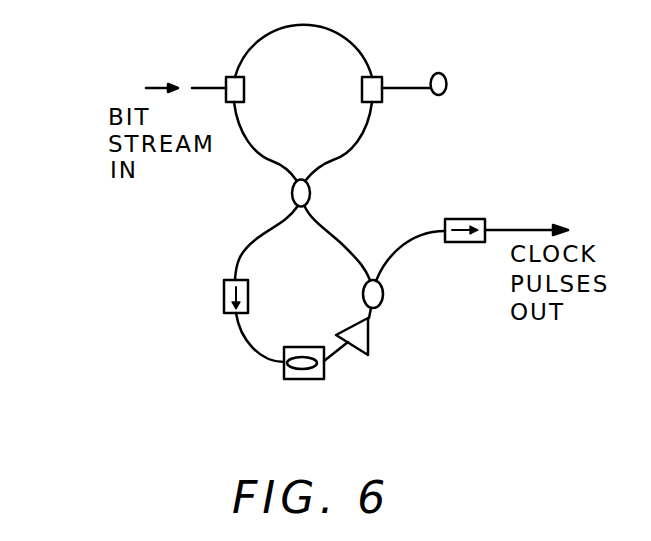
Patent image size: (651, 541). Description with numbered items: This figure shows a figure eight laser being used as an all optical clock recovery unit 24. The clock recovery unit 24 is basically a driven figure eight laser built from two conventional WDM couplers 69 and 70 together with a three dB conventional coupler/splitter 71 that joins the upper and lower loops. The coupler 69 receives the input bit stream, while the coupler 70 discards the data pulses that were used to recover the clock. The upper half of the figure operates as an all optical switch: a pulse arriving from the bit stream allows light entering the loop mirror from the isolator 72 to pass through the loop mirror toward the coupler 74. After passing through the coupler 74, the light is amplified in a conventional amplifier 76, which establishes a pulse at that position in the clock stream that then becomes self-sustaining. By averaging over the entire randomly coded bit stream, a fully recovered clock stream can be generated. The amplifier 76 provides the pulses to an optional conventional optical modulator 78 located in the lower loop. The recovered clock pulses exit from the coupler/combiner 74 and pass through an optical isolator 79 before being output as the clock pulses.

The optical clock recovery unit 24 is at (136, 262).
The WDM coupler 69 is at (233, 77).
The WDM coupler 70 is at (380, 103).
The coupler/splitter 71 is at (292, 191).
The isolator 72 is at (224, 297).
The coupler 74 is at (384, 291).
The amplifier 76 is at (369, 337).
The optical modulator 78 is at (302, 380).
The optical isolator 79 is at (498, 190).